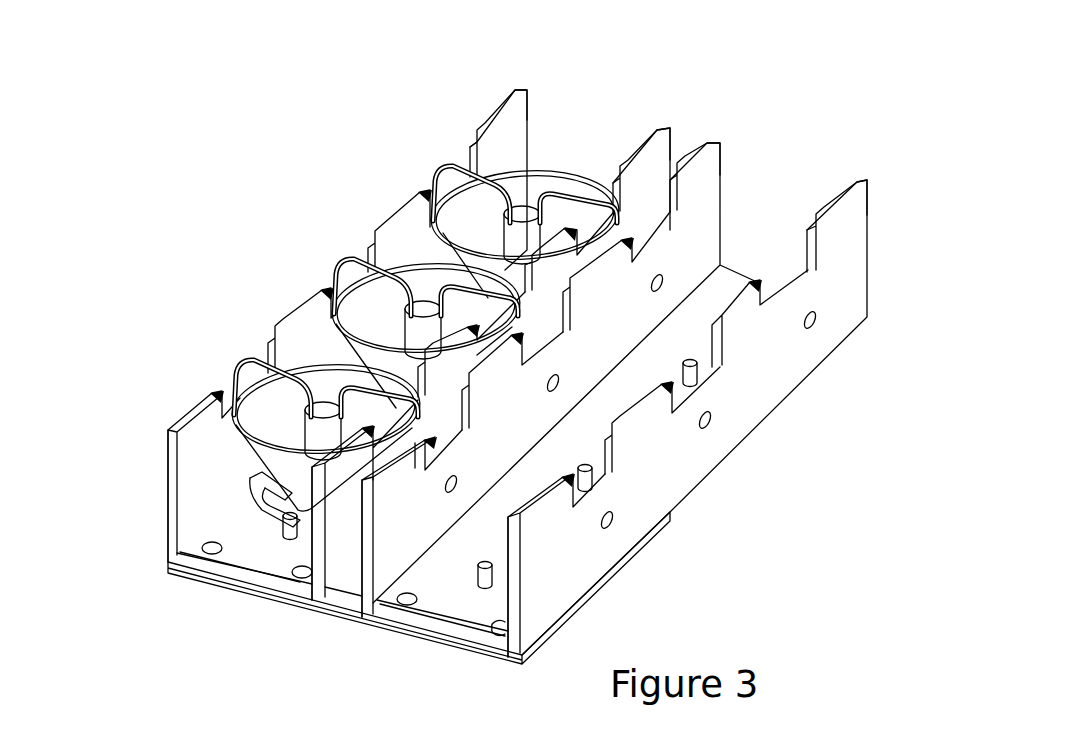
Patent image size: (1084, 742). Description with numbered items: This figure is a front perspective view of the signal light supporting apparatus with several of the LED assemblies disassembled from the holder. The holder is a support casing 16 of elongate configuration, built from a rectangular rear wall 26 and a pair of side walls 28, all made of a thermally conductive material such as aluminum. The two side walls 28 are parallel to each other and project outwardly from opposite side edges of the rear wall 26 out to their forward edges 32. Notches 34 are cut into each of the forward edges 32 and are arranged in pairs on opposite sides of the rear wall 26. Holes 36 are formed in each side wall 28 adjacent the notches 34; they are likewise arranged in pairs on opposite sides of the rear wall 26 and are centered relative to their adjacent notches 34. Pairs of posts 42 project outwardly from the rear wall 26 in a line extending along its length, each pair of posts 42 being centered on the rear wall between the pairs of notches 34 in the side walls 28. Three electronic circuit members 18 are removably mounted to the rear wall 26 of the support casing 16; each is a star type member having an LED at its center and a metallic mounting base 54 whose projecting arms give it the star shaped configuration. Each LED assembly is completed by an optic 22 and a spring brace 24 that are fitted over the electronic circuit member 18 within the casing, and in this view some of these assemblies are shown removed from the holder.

The support casing 16 is at (165, 505).
The electronic circuit member 18 is at (257, 478).
The optic 22 is at (562, 170).
The spring brace 24 is at (440, 162).
The rear wall 26 is at (270, 598).
The side walls 28 is at (165, 488).
The forward edges 32 is at (517, 90).
The notches 34 is at (445, 140).
The holes 36 is at (457, 480).
The posts 42 is at (290, 538).
The metallic mounting base 54 is at (262, 497).